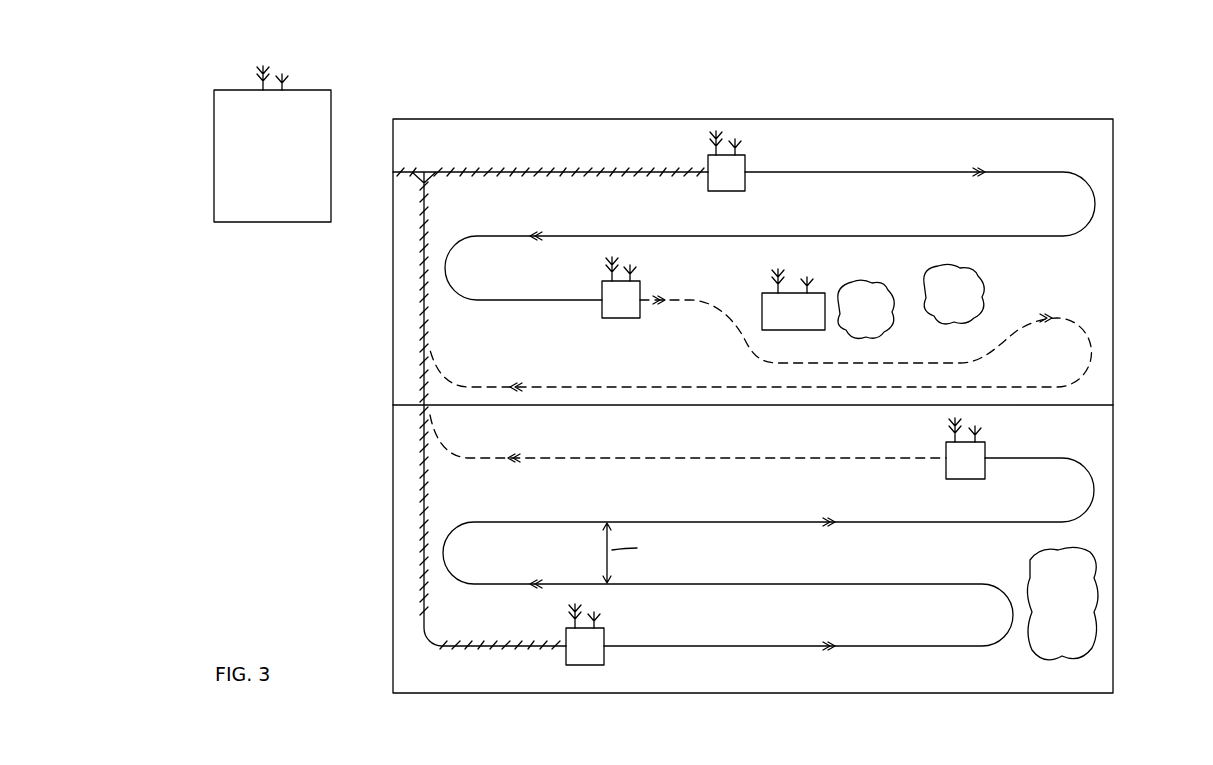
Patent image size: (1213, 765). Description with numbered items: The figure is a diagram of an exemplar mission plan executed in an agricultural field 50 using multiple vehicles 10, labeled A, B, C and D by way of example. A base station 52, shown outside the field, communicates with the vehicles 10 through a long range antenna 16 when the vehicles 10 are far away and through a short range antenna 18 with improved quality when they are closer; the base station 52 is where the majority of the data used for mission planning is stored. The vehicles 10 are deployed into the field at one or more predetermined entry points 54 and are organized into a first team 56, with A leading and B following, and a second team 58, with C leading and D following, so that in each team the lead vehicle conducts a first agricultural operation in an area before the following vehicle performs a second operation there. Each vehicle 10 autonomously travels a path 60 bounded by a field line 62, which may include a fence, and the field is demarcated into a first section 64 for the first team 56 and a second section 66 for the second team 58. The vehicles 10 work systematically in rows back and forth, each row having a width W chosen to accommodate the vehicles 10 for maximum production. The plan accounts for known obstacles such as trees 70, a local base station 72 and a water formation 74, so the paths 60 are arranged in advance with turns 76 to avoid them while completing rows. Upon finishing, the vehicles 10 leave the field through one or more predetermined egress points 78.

The vehicles 10 is at (745, 152).
The long range antenna 16 is at (256, 62).
The short range antenna 18 is at (288, 66).
The agricultural field 50 is at (1117, 92).
The base station 52 is at (285, 191).
The predetermined entry points 54 is at (386, 172).
The first team 56 is at (721, 191).
The second team 58 is at (963, 479).
The path 60 is at (1093, 190).
The field line 62 is at (573, 119).
The first section 64 is at (1096, 392).
The second section 66 is at (1088, 450).
The trees 70 is at (921, 296).
The local base station 72 is at (795, 330).
The water formation 74 is at (1072, 633).
The turns 76 is at (445, 268).
The predetermined egress points 78 is at (376, 414).